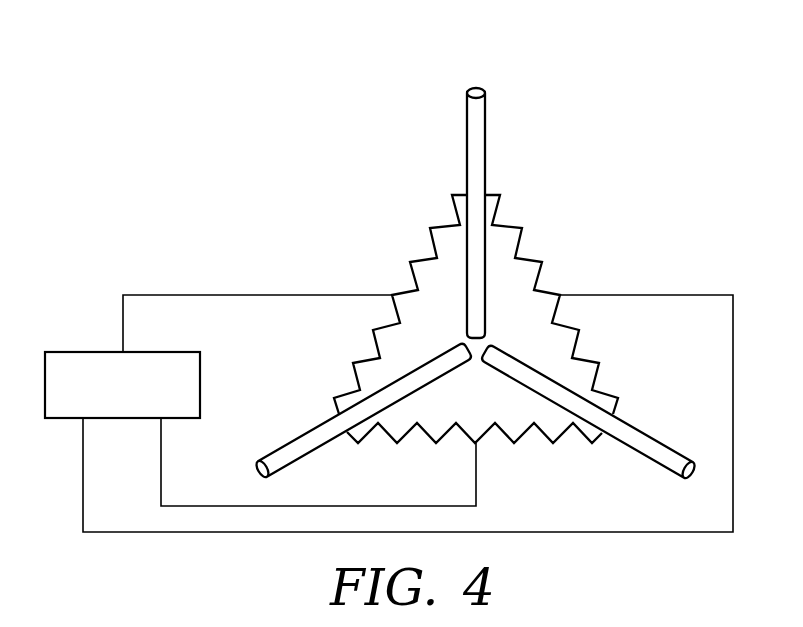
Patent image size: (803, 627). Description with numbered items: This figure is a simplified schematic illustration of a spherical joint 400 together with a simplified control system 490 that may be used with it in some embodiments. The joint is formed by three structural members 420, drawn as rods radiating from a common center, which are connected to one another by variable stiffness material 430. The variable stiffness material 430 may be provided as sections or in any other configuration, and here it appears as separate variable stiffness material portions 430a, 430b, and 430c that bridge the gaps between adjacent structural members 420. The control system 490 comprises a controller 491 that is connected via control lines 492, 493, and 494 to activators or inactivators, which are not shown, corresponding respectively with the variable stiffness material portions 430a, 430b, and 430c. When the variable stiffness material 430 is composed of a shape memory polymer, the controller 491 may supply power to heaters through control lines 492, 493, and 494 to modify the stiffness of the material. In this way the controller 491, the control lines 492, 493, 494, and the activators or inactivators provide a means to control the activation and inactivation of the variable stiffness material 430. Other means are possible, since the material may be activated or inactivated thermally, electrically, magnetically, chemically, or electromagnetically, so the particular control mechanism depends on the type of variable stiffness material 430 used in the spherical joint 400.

The spherical joint 400 is at (295, 183).
The structural members 420 is at (478, 138).
The variable stiffness material 430 is at (527, 258).
The variable stiffness material portion 430a is at (585, 357).
The variable stiffness material portion 430b is at (538, 446).
The variable stiffness material portion 430c is at (372, 359).
The control system 490 is at (102, 287).
The controller 491 is at (62, 362).
The control line 492 is at (118, 531).
The control line 493 is at (194, 506).
The control line 494 is at (193, 295).